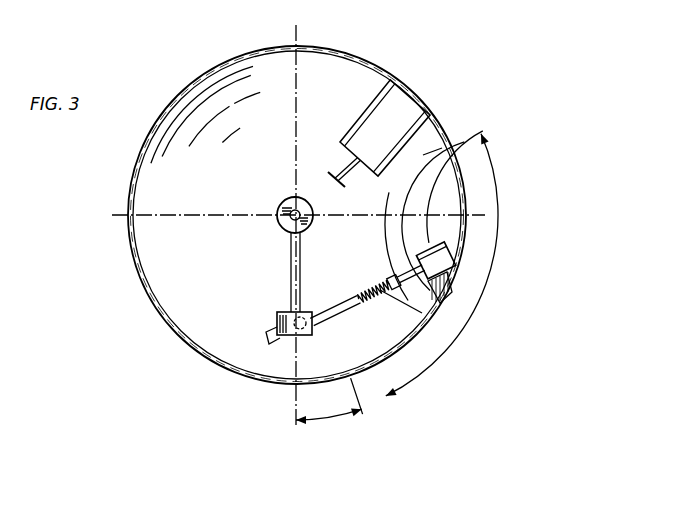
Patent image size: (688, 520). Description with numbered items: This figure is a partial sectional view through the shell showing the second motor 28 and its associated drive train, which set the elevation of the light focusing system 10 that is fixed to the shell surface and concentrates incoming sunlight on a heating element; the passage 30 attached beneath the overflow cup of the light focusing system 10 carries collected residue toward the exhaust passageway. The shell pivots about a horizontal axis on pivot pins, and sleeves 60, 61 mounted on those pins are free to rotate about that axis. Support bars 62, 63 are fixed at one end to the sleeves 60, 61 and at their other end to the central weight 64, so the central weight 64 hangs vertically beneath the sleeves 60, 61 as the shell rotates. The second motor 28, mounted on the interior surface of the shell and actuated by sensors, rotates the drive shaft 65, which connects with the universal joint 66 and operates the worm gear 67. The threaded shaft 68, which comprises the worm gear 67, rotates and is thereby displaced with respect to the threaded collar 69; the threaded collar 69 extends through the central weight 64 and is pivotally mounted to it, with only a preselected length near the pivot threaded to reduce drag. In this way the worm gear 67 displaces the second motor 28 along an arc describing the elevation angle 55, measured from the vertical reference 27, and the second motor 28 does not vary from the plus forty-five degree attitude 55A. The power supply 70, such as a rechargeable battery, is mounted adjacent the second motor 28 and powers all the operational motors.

The light focusing system 10 is at (430, 88).
The vertical reference axis 27 is at (292, 401).
The second motor 28 is at (487, 132).
The passage 30 is at (334, 167).
The elevation angle 55 is at (344, 411).
The +45° attitude 55A is at (474, 315).
The sleeve 60 is at (283, 226).
The sleeve 61 is at (173, 241).
The support bar 62 is at (288, 268).
The support bar 63 is at (168, 296).
The central weight 64 is at (291, 338).
The drive shaft 65 is at (466, 146).
The universal joint 66 is at (395, 237).
The worm gear 67 is at (363, 283).
The threaded shaft 68 is at (422, 334).
The threaded collar 69 is at (355, 312).
The power supply 70 is at (444, 240).